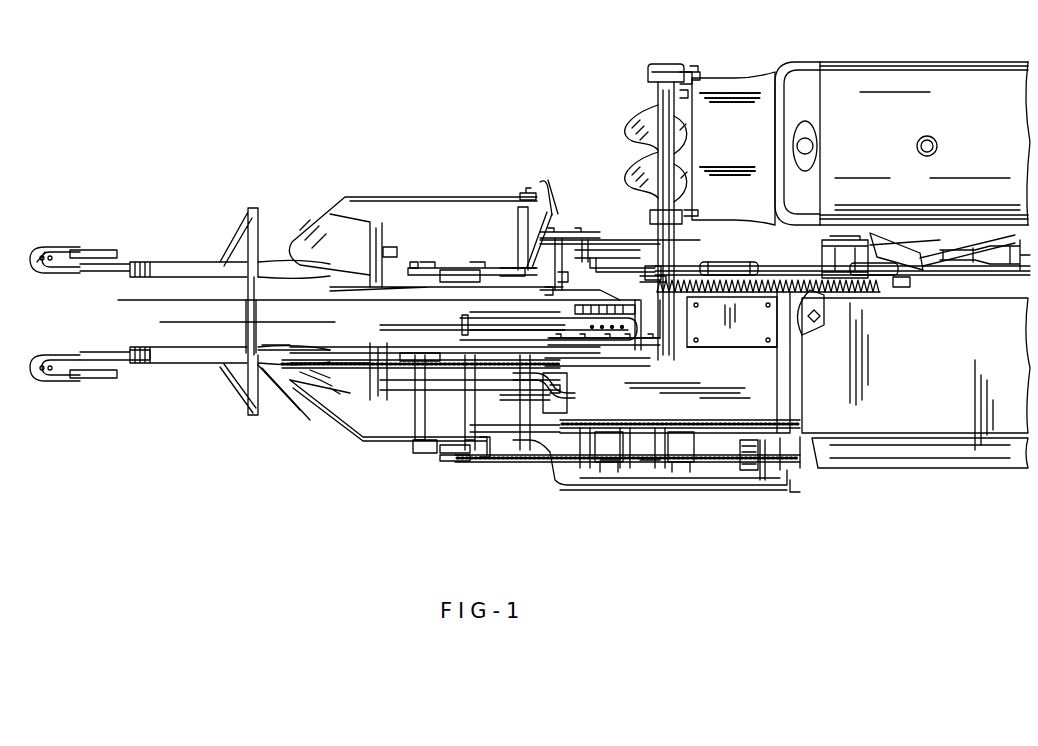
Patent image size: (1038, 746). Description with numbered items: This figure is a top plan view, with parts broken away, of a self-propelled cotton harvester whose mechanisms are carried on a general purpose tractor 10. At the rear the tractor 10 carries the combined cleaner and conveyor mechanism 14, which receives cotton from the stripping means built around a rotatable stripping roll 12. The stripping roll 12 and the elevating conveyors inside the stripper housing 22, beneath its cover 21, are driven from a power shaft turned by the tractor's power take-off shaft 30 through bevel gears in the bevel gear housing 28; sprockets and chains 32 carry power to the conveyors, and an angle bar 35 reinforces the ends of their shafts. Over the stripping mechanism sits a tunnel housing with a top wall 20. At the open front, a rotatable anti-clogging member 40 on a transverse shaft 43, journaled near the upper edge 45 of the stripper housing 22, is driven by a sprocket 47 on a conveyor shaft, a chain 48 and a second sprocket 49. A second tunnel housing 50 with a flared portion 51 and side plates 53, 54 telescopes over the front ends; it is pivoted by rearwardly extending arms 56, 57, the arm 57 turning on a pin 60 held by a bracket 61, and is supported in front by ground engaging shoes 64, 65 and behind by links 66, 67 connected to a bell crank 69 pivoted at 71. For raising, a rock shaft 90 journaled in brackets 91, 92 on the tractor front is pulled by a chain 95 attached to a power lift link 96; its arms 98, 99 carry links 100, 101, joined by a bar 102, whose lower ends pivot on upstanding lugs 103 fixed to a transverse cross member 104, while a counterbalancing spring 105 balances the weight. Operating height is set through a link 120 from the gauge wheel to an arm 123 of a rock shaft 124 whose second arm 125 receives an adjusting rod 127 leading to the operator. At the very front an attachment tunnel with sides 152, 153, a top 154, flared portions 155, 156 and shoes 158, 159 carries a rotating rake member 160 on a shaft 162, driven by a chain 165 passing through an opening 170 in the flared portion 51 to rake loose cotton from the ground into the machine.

The tractor 10 is at (898, 76).
The stripping roll 12 is at (640, 305).
The combined cleaner and conveyor mechanism 14 is at (915, 440).
The top wall 20 is at (626, 330).
The cover 21 is at (713, 420).
The stripper housing 22 is at (608, 472).
The bevel gear housing 28 is at (822, 250).
The power take-off shaft 30 is at (927, 262).
The sprockets and chains 32 is at (620, 415).
The angle bar 35 is at (590, 485).
The rotatable anti-clogging member 40 is at (453, 325).
The transverse shaft 43 is at (505, 390).
The upper edge 45 is at (480, 432).
The sprocket 47 is at (682, 472).
The chain 48 is at (510, 462).
The second sprocket 49 is at (460, 462).
The second tunnel housing 50 is at (448, 272).
The flared portion 51 is at (380, 232).
The side plate 53 is at (400, 290).
The side plate 54 is at (390, 345).
The rearwardly extending arm 56 is at (365, 440).
The rearwardly extending arm 57 is at (472, 195).
The pin 60 is at (528, 193).
The bracket 61 is at (518, 228).
The ground engaging shoe 64 is at (390, 250).
The ground engaging shoe 65 is at (372, 375).
The link 66 is at (372, 355).
The link 67 is at (420, 270).
The bell crank 69 is at (455, 272).
The pivot 71 is at (478, 274).
The rock shaft 90 is at (657, 104).
The bracket 91 is at (688, 72).
The bracket 92 is at (692, 218).
The chain 95 is at (742, 268).
The link 96 is at (997, 264).
The arm 98 is at (607, 352).
The arm 99 is at (634, 243).
The link 100 is at (622, 350).
The link 101 is at (588, 240).
The bar 102 is at (565, 285).
The upstanding lug 103 is at (556, 237).
The transverse cross member 104 is at (555, 218).
The counterbalancing spring 105 is at (738, 293).
The link 120 is at (410, 385).
The arm 123 is at (560, 385).
The rock shaft 124 is at (585, 383).
The second arm 125 is at (608, 251).
The adjusting rod 127 is at (633, 272).
The side 152 is at (185, 364).
The side 153 is at (172, 268).
The top 154 is at (150, 362).
The flared portion 155 is at (58, 378).
The flared portion 156 is at (55, 256).
The shoe 158 is at (100, 378).
The shoe 159 is at (100, 250).
The rotating rake member 160 is at (236, 315).
The shaft 162 is at (246, 338).
The chain 165 is at (283, 357).
The opening 170 is at (320, 392).